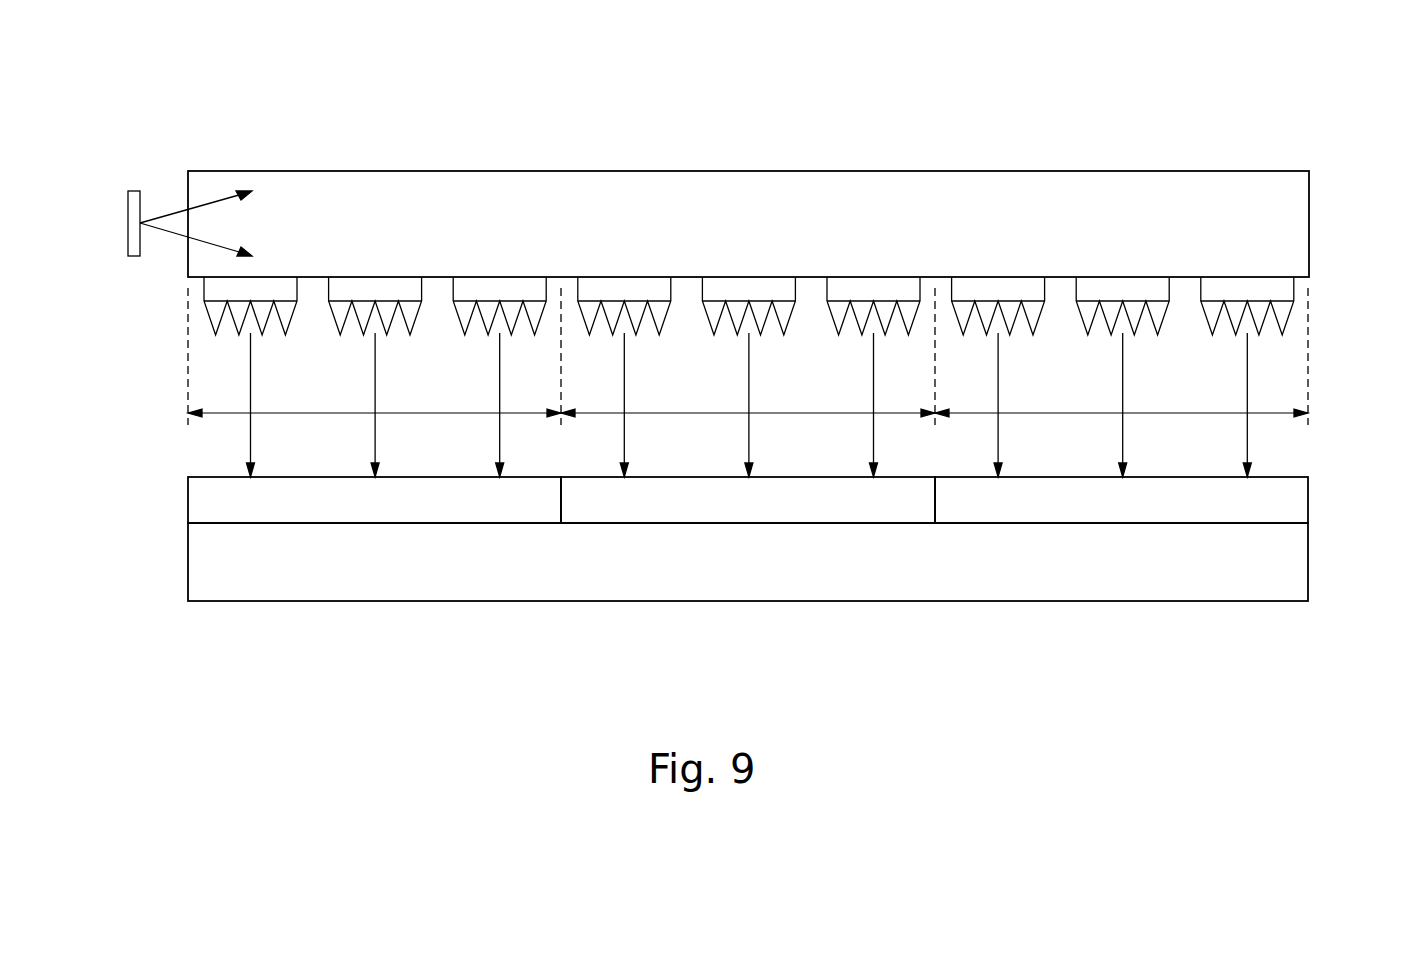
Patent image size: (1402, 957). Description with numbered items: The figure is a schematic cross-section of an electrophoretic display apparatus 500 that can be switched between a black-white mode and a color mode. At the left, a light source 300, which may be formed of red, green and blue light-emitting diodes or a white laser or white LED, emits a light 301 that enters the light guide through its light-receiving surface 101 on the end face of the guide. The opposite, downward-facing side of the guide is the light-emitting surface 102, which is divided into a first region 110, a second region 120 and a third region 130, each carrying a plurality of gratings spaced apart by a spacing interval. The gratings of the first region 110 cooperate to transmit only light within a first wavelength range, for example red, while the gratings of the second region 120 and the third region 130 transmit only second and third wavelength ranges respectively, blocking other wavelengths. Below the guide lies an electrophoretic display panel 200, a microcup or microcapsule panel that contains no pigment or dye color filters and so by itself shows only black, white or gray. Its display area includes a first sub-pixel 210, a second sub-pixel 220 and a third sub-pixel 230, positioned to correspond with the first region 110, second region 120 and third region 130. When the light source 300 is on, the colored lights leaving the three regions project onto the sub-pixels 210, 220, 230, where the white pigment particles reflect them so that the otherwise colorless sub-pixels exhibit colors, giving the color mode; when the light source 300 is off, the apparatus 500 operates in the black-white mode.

The electrophoretic display apparatus 500 is at (1246, 89).
The light-receiving surface 101 is at (186, 186).
The light-emitting surface 102 is at (436, 275).
The light source 300 is at (135, 191).
The light 301 is at (212, 197).
The first region 110 is at (374, 382).
The second region 120 is at (748, 382).
The third region 130 is at (1121, 382).
The electrophoretic display panel 200 is at (1295, 562).
The first sub-pixel 210 is at (382, 507).
The second sub-pixel 220 is at (752, 507).
The third sub-pixel 230 is at (1123, 508).